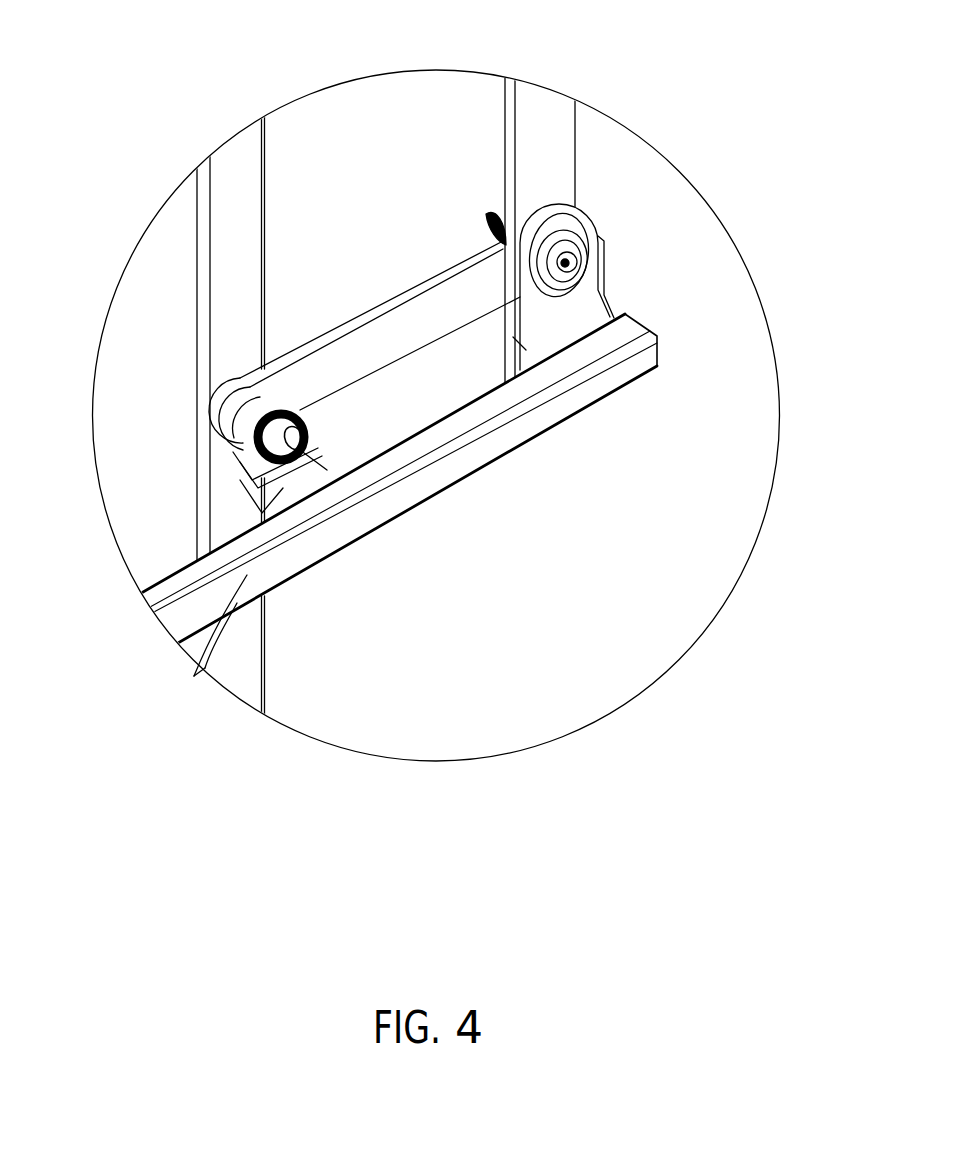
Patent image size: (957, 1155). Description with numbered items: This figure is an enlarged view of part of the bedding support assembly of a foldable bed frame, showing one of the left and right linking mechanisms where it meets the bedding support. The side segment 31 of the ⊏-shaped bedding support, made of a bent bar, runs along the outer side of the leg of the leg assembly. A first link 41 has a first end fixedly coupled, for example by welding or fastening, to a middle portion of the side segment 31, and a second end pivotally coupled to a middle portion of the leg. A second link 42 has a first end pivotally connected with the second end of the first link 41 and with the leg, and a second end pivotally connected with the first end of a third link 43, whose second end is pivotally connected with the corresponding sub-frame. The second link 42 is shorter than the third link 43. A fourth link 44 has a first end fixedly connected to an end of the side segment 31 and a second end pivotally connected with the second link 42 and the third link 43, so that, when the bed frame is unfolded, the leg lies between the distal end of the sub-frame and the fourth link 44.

The side segment 31 is at (417, 483).
The first link 41 is at (214, 622).
The second link 42 is at (390, 337).
The third link 43 is at (535, 160).
The fourth link 44 is at (573, 312).